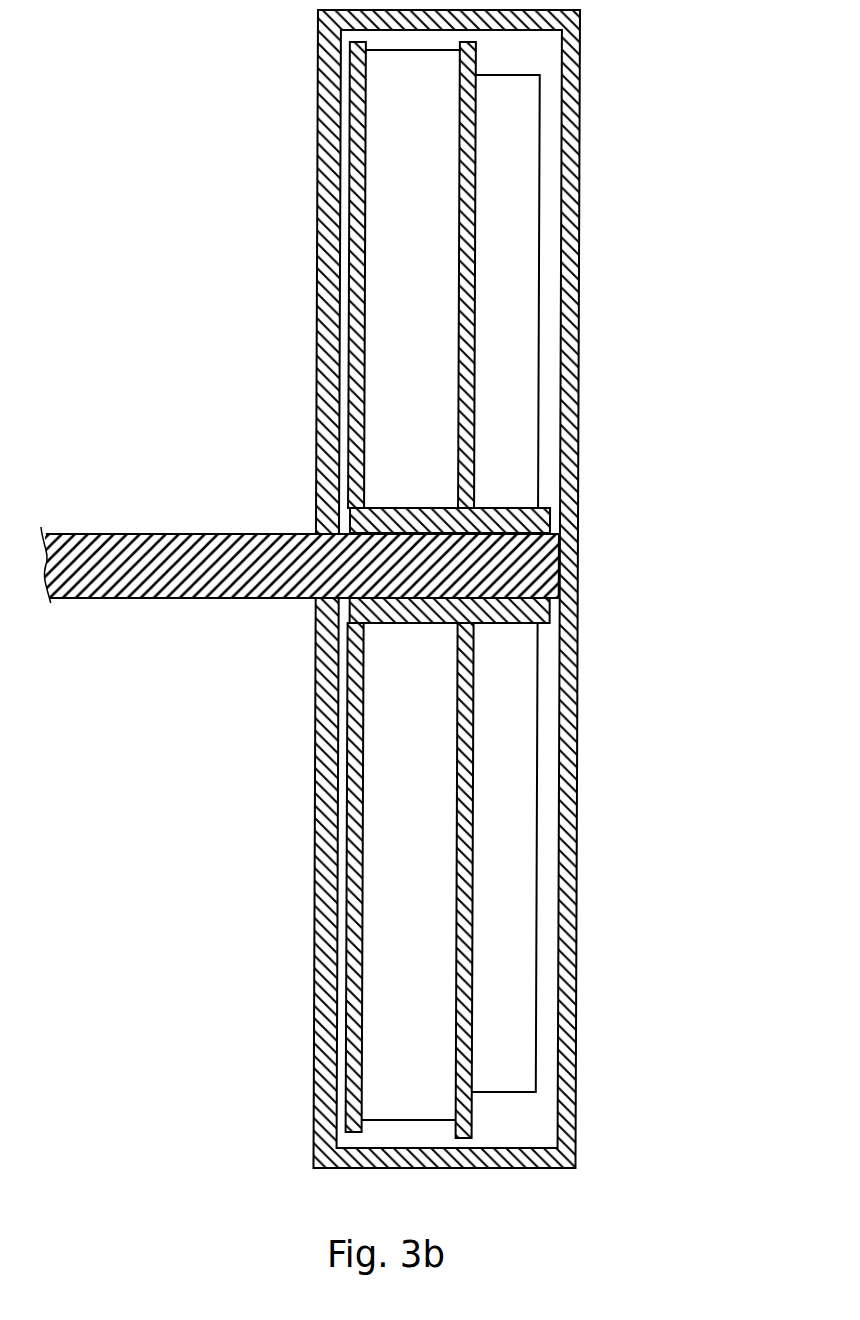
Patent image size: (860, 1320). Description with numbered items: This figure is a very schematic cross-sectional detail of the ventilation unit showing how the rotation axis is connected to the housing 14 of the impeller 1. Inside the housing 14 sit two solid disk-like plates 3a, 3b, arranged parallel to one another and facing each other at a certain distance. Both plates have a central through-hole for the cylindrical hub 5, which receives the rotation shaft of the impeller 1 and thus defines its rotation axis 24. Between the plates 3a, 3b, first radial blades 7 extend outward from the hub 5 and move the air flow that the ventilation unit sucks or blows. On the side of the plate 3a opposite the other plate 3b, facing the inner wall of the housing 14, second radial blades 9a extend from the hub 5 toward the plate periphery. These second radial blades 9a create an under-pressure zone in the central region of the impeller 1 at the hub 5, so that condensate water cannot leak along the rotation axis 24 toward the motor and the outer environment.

The impeller 1 is at (385, 589).
The plate 3a is at (477, 57).
The plate 3b is at (360, 81).
The hub 5 is at (513, 623).
The first radial blades 7 is at (410, 310).
The second radial blades 9a is at (508, 164).
The housing 14 is at (580, 345).
The rotation axis 24 is at (125, 534).